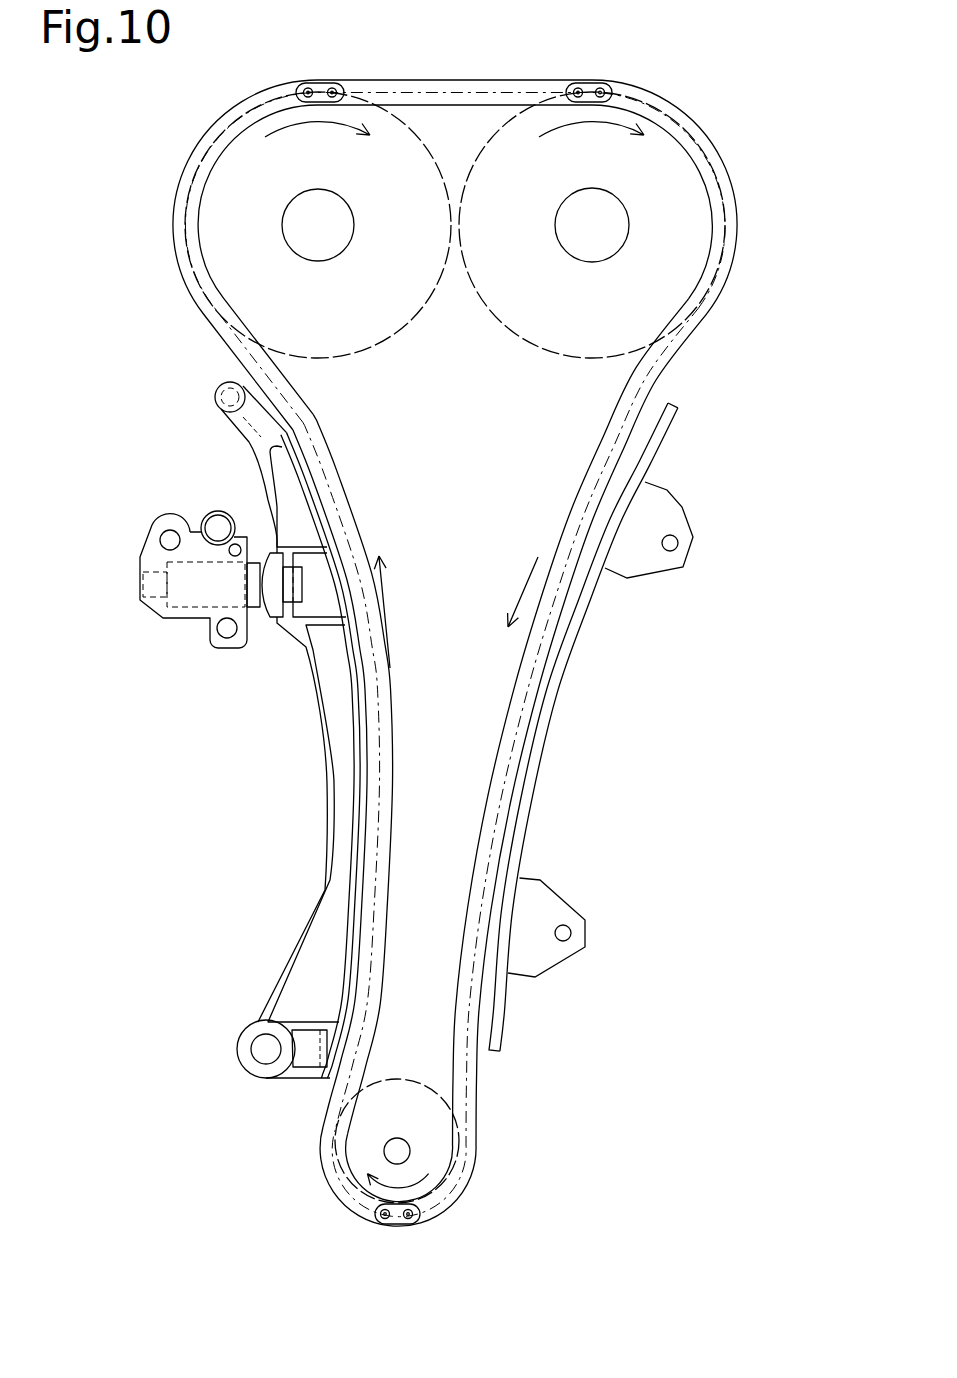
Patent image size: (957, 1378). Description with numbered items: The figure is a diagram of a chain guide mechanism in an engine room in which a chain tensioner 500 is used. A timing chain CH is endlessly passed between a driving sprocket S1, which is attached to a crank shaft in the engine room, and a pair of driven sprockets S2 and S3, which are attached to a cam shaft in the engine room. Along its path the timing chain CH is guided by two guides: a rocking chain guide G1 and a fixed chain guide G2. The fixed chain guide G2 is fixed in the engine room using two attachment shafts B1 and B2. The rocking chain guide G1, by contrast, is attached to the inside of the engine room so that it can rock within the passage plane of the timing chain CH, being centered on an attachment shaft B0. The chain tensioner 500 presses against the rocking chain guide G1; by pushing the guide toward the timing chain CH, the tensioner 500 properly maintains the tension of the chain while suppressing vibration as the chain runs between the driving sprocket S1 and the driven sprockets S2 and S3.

The timing chain CH is at (665, 360).
The driving sprocket S1 is at (445, 1150).
The driven sprocket S2 is at (232, 218).
The driven sprocket S3 is at (662, 210).
The rocking chain guide G1 is at (327, 925).
The fixed chain guide G2 is at (535, 780).
The attachment shaft B0 is at (266, 1048).
The attachment shaft B1 is at (688, 545).
The attachment shaft B2 is at (570, 933).
The chain tensioner 500 is at (153, 557).